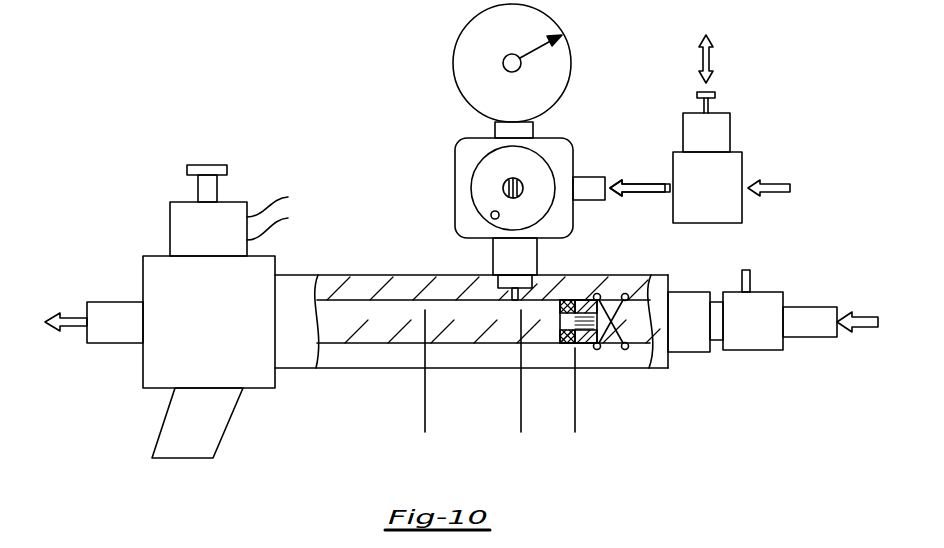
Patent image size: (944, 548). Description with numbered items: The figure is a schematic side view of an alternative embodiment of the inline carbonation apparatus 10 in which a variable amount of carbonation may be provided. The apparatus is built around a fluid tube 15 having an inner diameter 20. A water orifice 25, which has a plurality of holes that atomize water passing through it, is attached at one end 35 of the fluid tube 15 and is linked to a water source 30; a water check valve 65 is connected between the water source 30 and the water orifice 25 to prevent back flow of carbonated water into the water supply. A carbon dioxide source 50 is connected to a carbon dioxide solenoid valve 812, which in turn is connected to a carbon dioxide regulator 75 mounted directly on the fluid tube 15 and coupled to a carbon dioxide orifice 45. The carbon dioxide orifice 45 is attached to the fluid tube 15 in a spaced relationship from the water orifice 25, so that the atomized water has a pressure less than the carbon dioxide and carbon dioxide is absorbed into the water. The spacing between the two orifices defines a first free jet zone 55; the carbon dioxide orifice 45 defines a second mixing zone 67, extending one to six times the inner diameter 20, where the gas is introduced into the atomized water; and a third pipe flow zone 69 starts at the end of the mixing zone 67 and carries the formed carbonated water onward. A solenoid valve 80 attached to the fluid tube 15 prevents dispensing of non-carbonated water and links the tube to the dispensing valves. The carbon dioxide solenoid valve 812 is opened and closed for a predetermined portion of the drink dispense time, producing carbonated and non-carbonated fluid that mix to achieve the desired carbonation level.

The inline carbonation apparatus 10 is at (418, 77).
The carbon dioxide regulator 75 is at (455, 177).
The carbon dioxide orifice 45 is at (522, 297).
The carbon dioxide source 50 is at (782, 180).
The carbon dioxide solenoid valve 812 is at (720, 193).
The fluid tube 15 is at (450, 312).
The inner diameter 20 is at (363, 378).
The water orifice 25 is at (590, 346).
The end of the fluid tube 35 is at (573, 345).
The water check valve 65 is at (768, 292).
The water source 30 is at (865, 316).
The solenoid valve 80 is at (168, 418).
The third pipe flow zone 69 is at (425, 422).
The second mixing zone 67 is at (521, 422).
The first free jet zone 55 is at (625, 422).